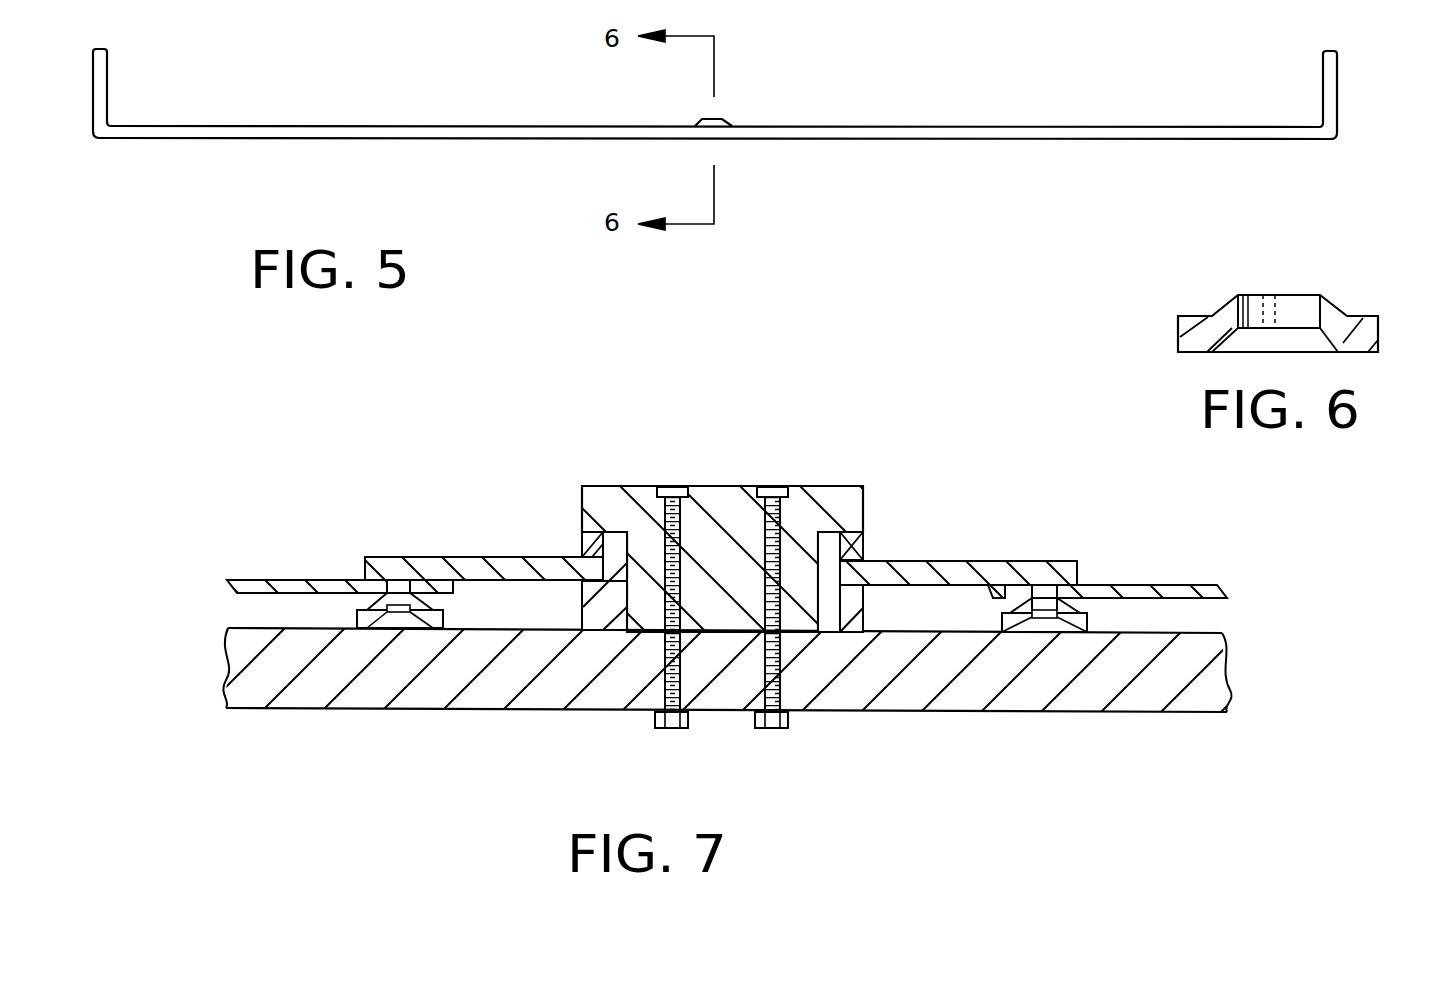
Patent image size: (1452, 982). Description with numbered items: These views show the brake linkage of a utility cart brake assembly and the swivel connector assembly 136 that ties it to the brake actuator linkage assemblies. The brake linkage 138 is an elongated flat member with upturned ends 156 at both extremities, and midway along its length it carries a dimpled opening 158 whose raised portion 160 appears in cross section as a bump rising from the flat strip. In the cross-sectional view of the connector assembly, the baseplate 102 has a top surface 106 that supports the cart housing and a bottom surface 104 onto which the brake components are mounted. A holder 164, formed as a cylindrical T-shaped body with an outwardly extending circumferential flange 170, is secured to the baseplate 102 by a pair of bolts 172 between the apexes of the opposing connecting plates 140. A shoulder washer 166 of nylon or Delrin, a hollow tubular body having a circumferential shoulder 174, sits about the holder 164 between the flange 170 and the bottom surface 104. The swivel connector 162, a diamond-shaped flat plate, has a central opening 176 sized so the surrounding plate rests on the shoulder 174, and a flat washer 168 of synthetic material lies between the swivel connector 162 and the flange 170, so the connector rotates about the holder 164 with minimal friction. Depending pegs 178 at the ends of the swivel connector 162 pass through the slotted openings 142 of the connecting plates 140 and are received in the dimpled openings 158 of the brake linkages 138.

In FIG. 7, the baseplate 102 is at (1090, 713).
In FIG. 7, the bottom surface 104 is at (1198, 633).
In FIG. 7, the top surface 106 is at (1183, 713).
In FIG. 7, the swivel connector assembly 136 is at (850, 470).
In FIG. 5, the brake linkage 138 is at (908, 112).
In FIG. 7, the brake linkage 138 is at (340, 614).
In FIG. 7, the connecting plate 140 is at (238, 582).
In FIG. 7, the slotted opening 142 is at (360, 582).
In FIG. 5, the upturned end 156 is at (110, 66).
In FIG. 5, the dimpled opening 158 is at (723, 118).
In FIG. 6, the dimpled opening 158 is at (1255, 295).
In FIG. 7, the dimpled opening 158 is at (388, 627).
In FIG. 6, the raised portion 160 is at (1227, 295).
In FIG. 7, the swivel connector 162 is at (450, 547).
In FIG. 7, the holder 164 is at (708, 493).
In FIG. 7, the shoulder washer 166 is at (593, 620).
In FIG. 7, the flat washer 168 is at (587, 547).
In FIG. 7, the flange 170 is at (576, 487).
In FIG. 7, the bolt 172 is at (683, 680).
In FIG. 7, the shoulder 174 is at (593, 594).
In FIG. 7, the central opening 176 is at (853, 560).
In FIG. 7, the peg 178 is at (400, 597).